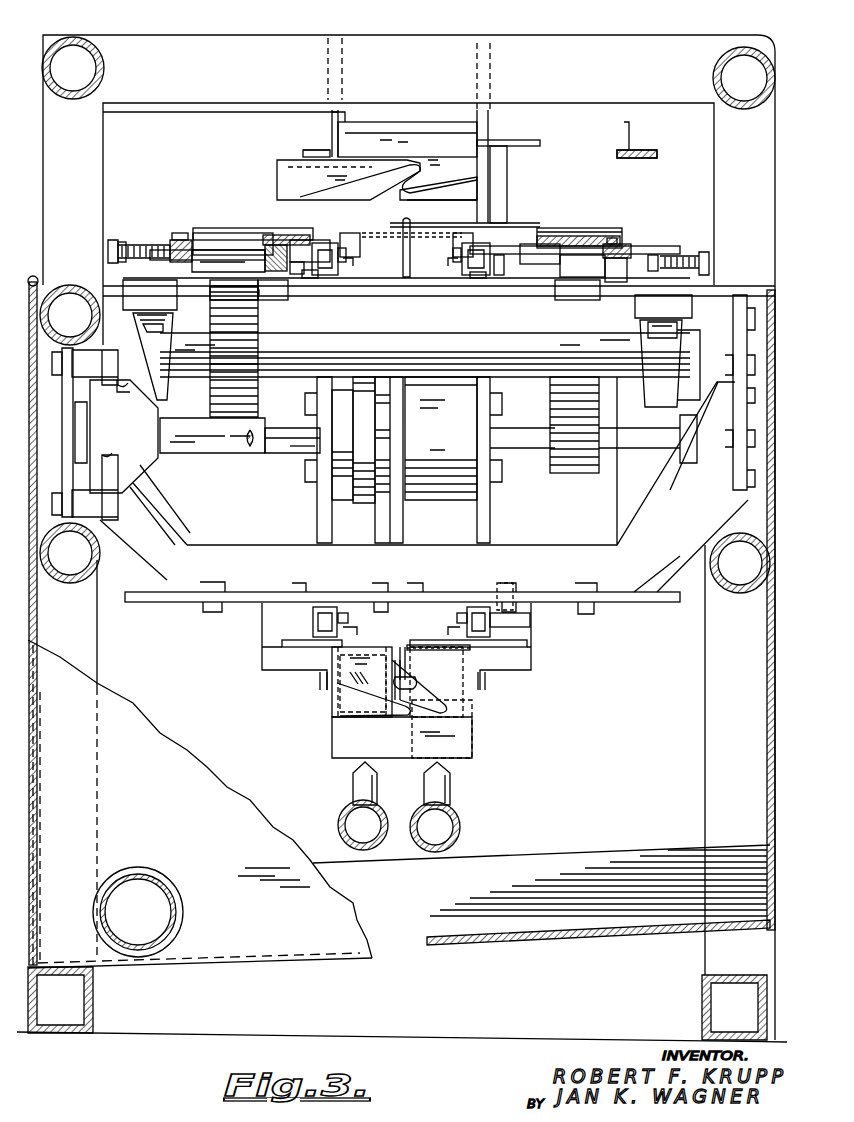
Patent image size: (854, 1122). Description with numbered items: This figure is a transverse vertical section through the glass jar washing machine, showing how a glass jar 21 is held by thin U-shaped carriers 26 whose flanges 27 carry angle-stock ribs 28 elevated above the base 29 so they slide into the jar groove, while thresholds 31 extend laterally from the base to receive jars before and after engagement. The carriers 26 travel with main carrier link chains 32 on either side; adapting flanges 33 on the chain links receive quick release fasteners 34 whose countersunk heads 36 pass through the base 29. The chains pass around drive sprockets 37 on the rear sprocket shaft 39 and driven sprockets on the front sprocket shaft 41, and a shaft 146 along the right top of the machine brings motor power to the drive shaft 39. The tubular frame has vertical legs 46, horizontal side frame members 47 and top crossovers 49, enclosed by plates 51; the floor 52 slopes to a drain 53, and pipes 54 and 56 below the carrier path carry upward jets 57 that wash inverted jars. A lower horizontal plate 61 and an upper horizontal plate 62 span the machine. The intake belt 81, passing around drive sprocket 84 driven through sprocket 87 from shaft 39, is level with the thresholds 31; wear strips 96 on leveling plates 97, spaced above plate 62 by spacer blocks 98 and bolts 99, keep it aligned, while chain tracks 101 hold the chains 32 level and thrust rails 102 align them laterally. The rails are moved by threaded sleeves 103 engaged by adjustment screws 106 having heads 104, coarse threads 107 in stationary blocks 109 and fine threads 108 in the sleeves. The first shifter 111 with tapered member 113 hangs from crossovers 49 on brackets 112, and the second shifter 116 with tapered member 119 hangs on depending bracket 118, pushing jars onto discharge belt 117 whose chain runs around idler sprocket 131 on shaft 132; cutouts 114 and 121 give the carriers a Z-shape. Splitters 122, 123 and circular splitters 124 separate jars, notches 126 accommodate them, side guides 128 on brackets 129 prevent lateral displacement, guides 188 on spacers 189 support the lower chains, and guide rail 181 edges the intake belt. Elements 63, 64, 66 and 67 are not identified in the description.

The glass jar 21 is at (334, 714).
The carrier 26 is at (435, 146).
The flange 27 is at (312, 744).
The rib 28 is at (372, 130).
The base 29 is at (464, 232).
The threshold 31 is at (310, 232).
The main carrier link chain 32 is at (325, 278).
The adapting flange 33 is at (344, 260).
The quick release fastener 34 is at (353, 258).
The countersunk head 36 is at (476, 228).
The drive sprocket 37 is at (310, 488).
The rear sprocket shaft 39 is at (296, 456).
The front sprocket shaft 41 is at (199, 460).
The vertical leg 46 is at (98, 650).
The horizontal side frame member 47 is at (66, 34).
The horizontal top crossover 49 is at (666, 106).
The side, end and top plate 51 is at (38, 615).
The floor 52 is at (462, 940).
The drain 53 is at (177, 880).
The pipe 54 is at (464, 829).
The pipe 56 is at (340, 826).
The jet 57 is at (352, 790).
The lower horizontal plate 61 is at (664, 620).
The upper horizontal plate 62 is at (626, 294).
The arm 63 is at (152, 478).
The bracket plate 64 is at (110, 432).
The pivot 66 is at (126, 392).
The bolt 67 is at (112, 350).
The intake belt 81 is at (588, 236).
The intake belt drive sprocket 84 is at (599, 395).
The sprocket 87 is at (378, 528).
The wear strip 96 is at (280, 232).
The horizontal leveling plate 97 is at (320, 246).
The spacer block 98 is at (272, 296).
The bolt 99 is at (271, 300).
The chain track 101 is at (345, 276).
The thrust rail 102 is at (306, 278).
The internally threaded sleeve 103 is at (266, 268).
The head 104 is at (112, 240).
The adjustment screw 106 is at (203, 240).
The coarse thread 107 is at (132, 241).
The fine thread 108 is at (398, 263).
The stationary spaced block 109 is at (175, 280).
The first shifter 111 is at (506, 186).
The vertical bracket 112 is at (503, 130).
The tapered horizontally extending member 113 is at (438, 189).
The cutout 114 is at (437, 176).
The second shifter 116 is at (305, 158).
The discharge belt 117 is at (240, 220).
The depending bracket 118 is at (330, 126).
The tapered member 119 is at (348, 180).
The cutout 121 is at (364, 178).
The horizontal splitter 122 is at (411, 252).
The additional splitter 123 is at (405, 632).
The circular splitter 124 is at (408, 523).
The notch 126 is at (406, 234).
The side guide 128 is at (316, 690).
The bracket 129 is at (260, 657).
The idler sprocket 131 is at (256, 346).
The shaft 132 is at (278, 378).
The shaft 146 is at (417, 478).
The guide rail 181 is at (624, 134).
The guide 188 is at (529, 635).
The spacer 189 is at (523, 594).